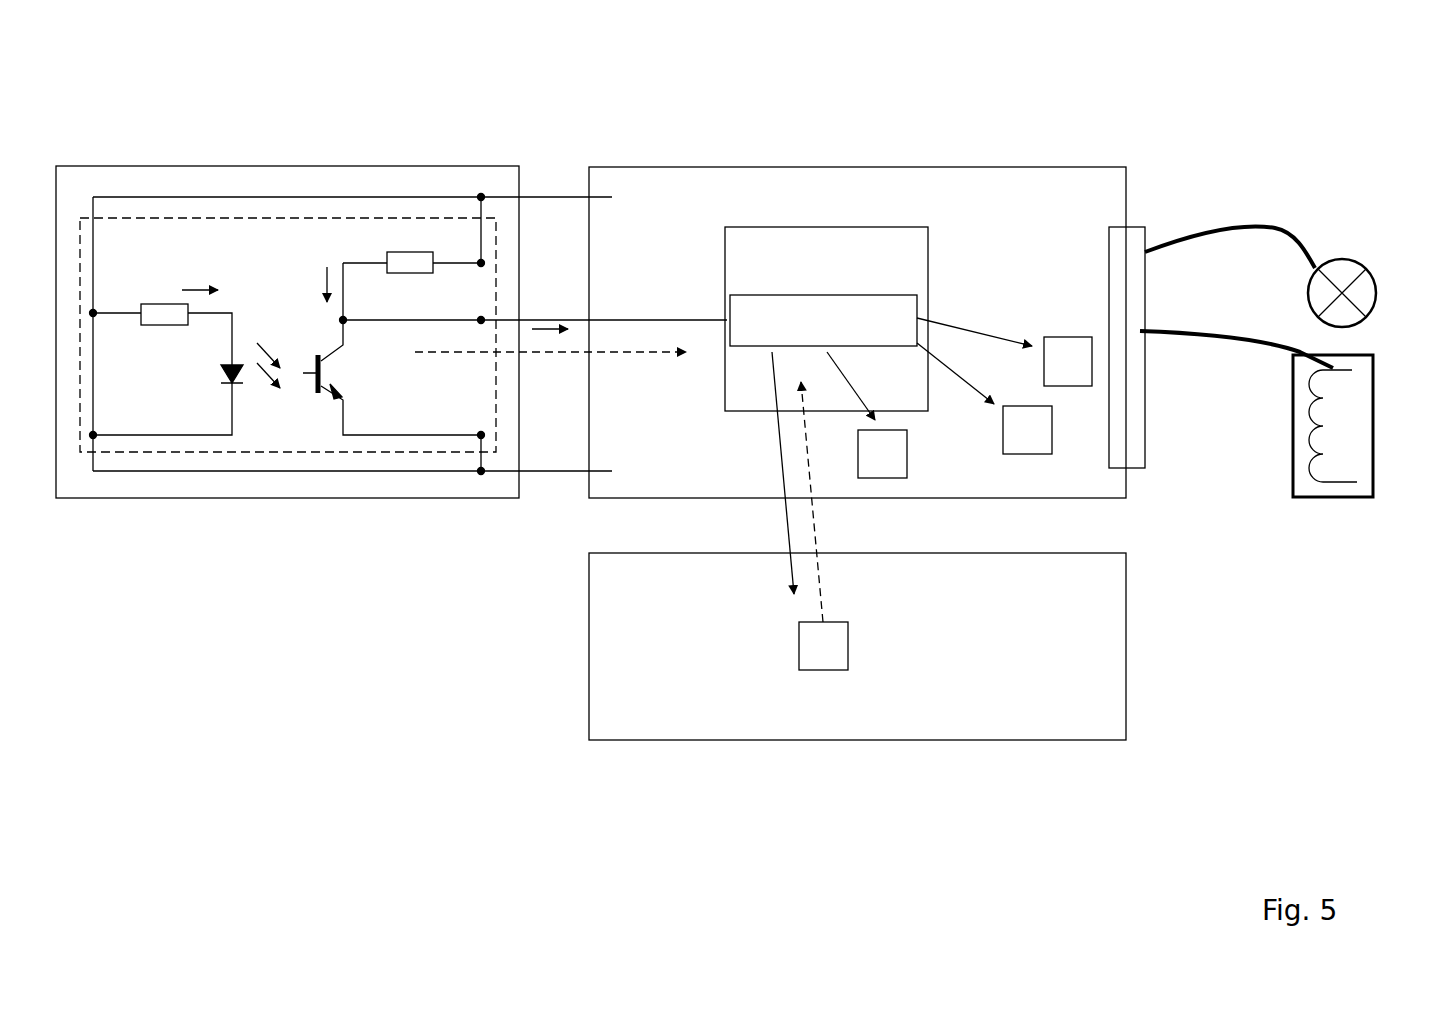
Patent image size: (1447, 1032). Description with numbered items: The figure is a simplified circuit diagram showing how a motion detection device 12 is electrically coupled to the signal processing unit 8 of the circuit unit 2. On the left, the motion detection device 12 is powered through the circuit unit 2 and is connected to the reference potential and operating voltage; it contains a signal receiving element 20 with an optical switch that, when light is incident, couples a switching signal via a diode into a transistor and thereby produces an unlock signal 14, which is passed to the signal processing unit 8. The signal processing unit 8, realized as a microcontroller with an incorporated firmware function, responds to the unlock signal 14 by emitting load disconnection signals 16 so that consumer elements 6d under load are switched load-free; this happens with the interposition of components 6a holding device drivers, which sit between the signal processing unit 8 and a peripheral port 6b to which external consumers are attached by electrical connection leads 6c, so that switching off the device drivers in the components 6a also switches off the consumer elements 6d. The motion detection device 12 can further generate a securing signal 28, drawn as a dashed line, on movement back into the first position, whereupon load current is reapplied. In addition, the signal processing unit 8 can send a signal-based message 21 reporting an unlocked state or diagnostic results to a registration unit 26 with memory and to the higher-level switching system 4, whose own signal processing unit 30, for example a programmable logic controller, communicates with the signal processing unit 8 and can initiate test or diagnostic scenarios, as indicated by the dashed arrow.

The circuit unit 2 is at (978, 275).
The higher-level switching system 4 is at (1012, 620).
The components with device drivers 6a is at (1077, 358).
The peripheral port 6b is at (1142, 452).
The electrical connection leads 6c is at (1263, 337).
The consumer elements 6d is at (1376, 307).
The signal processing unit 8 is at (893, 258).
The motion detection device 12 is at (318, 133).
The unlock signal 14 is at (556, 329).
The load disconnection signal 16 is at (960, 377).
The signal receiving element 20 is at (270, 414).
The signal-based message 21 is at (857, 397).
The registration unit 26 is at (893, 463).
The securing signal 28 is at (530, 352).
The signal processing unit of the switching system 30 is at (828, 652).